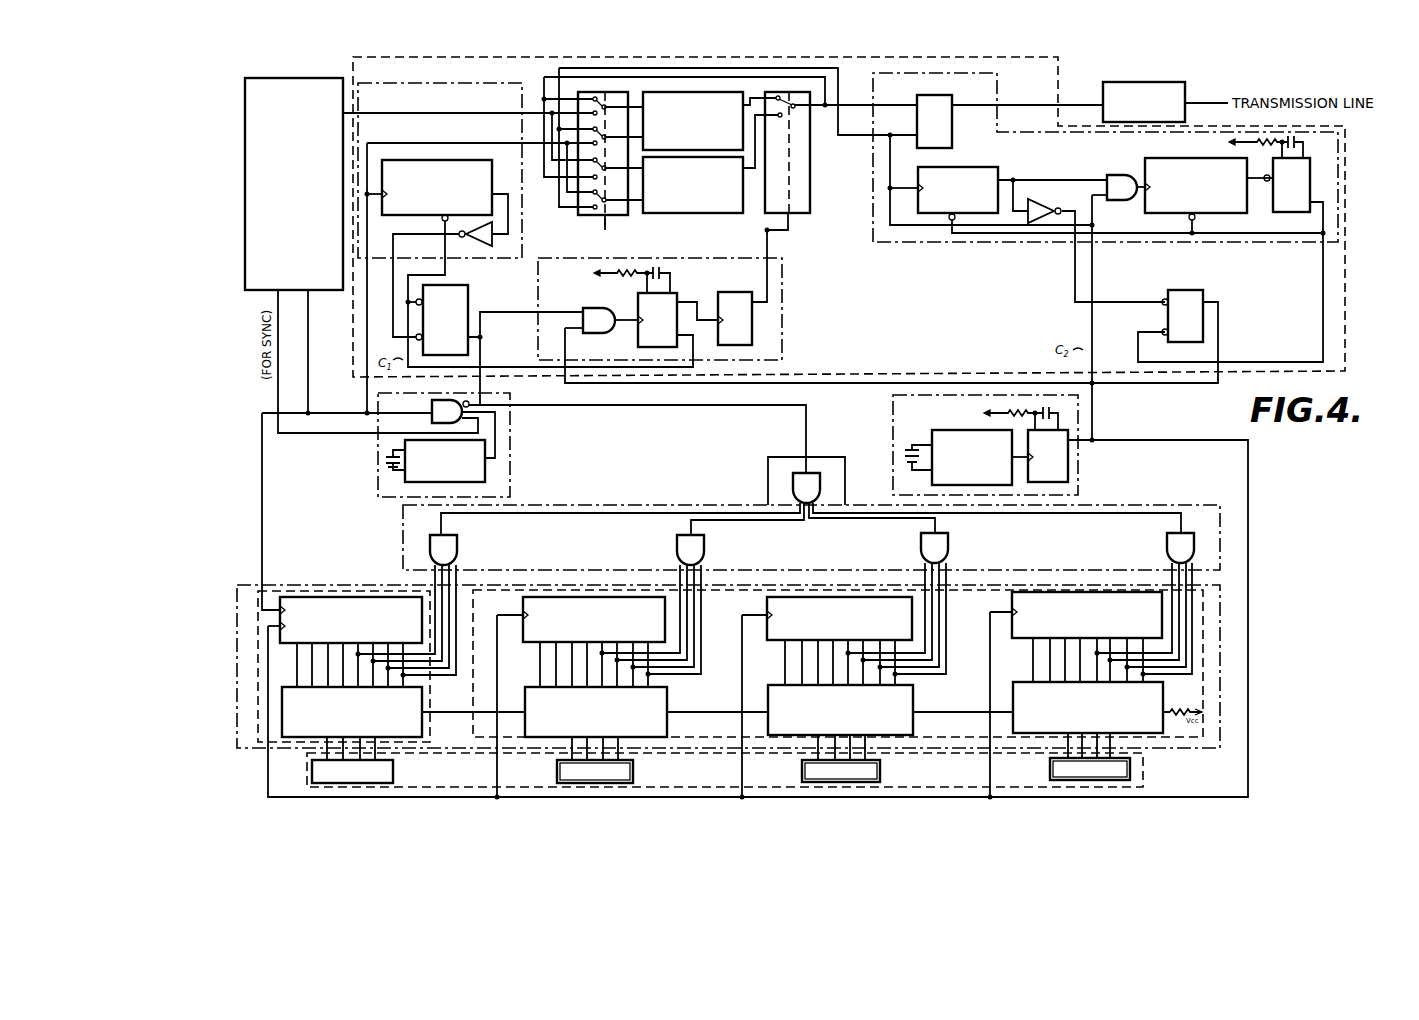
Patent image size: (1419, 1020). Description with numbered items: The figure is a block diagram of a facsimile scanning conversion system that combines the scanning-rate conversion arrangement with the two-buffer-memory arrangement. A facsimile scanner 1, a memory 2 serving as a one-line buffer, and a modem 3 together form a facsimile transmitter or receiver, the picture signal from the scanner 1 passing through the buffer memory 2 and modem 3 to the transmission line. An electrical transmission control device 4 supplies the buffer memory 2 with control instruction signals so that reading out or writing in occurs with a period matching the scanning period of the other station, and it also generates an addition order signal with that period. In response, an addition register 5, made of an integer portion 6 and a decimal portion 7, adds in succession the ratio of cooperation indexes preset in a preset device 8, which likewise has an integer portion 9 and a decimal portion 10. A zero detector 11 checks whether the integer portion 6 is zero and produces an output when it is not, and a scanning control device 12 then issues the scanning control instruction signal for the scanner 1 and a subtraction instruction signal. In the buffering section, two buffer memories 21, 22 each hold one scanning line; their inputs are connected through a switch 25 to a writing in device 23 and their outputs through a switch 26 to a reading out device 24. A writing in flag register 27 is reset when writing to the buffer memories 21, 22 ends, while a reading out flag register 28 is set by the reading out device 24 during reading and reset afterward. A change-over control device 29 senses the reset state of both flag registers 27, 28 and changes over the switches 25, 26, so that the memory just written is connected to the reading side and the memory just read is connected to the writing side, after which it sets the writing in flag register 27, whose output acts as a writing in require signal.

The facsimile scanner 1 is at (245, 118).
The memory 2 is at (1058, 72).
The modem 3 is at (1122, 82).
The electrical transmission control device 4 is at (1078, 478).
The addition register 5 is at (330, 588).
The integer portion 6 is at (430, 680).
The decimal portion 7 is at (1220, 642).
The preset device 8 is at (493, 784).
The integer portion 9 is at (393, 771).
The decimal portion 10 is at (688, 786).
The zero detector 11 is at (716, 505).
The scanning control device 12 is at (510, 468).
The buffer memory 21 is at (693, 121).
The buffer memory 22 is at (693, 185).
The writing in device 23 is at (522, 220).
The reading out device 24 is at (895, 245).
The switch 25 is at (618, 218).
The switch 26 is at (810, 190).
The writing in flag register 27 is at (468, 288).
The reading out flag register 28 is at (1190, 290).
The change-over control device 29 is at (782, 318).